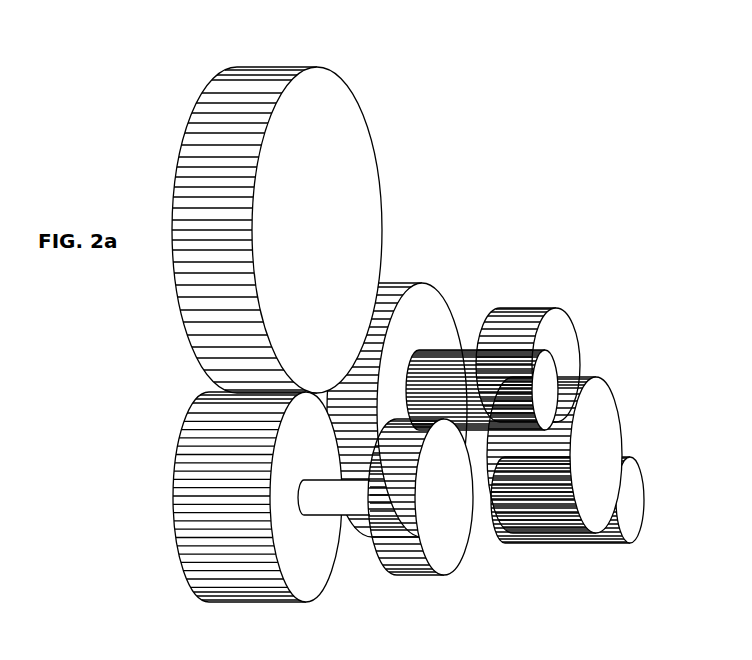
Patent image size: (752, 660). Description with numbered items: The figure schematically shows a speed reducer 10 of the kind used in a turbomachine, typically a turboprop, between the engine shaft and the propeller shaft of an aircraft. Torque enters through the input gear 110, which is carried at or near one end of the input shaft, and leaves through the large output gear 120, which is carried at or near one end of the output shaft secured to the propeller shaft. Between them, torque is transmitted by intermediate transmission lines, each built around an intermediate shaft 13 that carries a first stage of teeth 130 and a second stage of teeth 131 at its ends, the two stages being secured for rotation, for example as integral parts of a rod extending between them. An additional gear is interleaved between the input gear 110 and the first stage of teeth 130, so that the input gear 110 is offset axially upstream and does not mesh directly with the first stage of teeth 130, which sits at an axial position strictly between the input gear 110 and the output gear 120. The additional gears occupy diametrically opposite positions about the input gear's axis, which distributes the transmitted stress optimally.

The speed reducer 10 is at (584, 205).
The intermediate shaft 13 is at (327, 514).
The input gear 110 is at (603, 415).
The output gear 120 is at (200, 308).
The first stage of teeth 130 is at (400, 555).
The second stage of teeth 131 is at (200, 550).